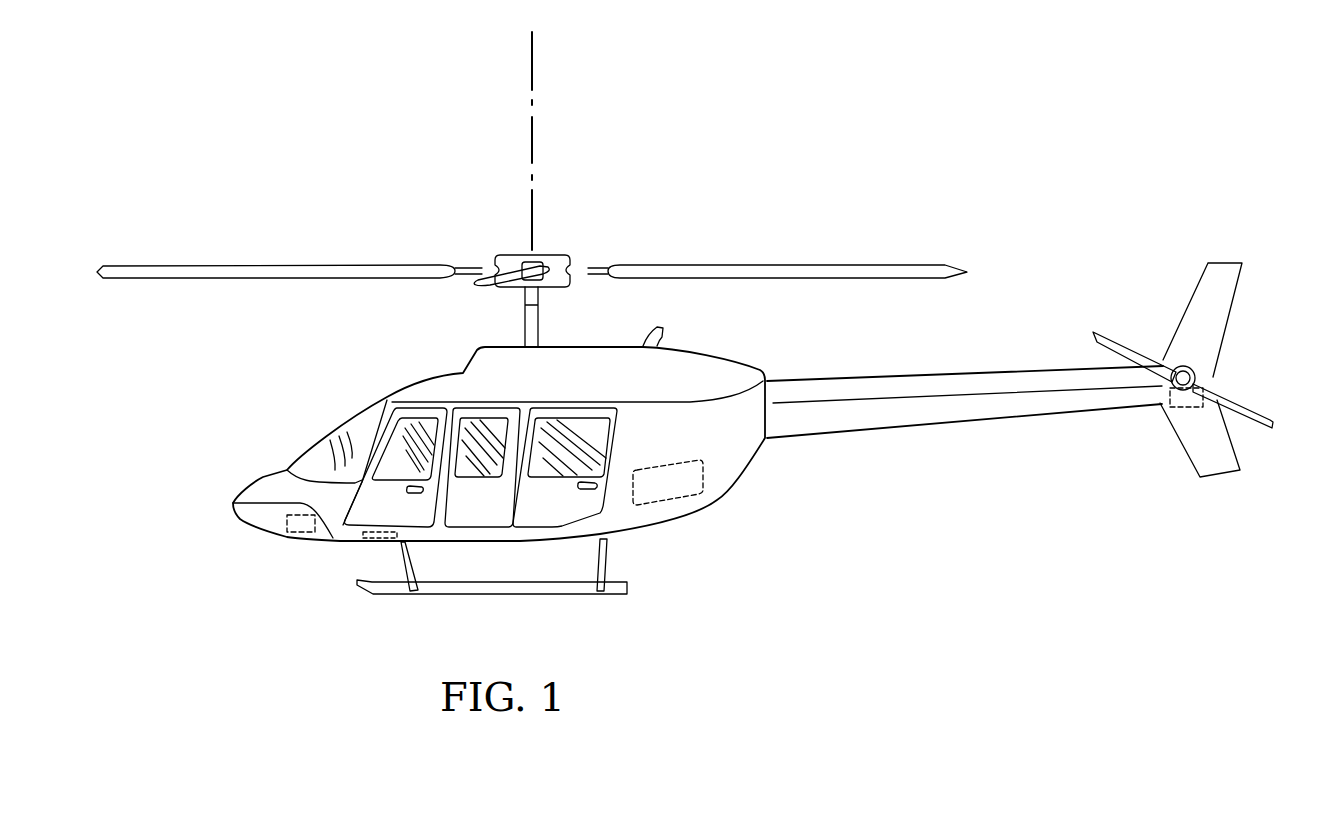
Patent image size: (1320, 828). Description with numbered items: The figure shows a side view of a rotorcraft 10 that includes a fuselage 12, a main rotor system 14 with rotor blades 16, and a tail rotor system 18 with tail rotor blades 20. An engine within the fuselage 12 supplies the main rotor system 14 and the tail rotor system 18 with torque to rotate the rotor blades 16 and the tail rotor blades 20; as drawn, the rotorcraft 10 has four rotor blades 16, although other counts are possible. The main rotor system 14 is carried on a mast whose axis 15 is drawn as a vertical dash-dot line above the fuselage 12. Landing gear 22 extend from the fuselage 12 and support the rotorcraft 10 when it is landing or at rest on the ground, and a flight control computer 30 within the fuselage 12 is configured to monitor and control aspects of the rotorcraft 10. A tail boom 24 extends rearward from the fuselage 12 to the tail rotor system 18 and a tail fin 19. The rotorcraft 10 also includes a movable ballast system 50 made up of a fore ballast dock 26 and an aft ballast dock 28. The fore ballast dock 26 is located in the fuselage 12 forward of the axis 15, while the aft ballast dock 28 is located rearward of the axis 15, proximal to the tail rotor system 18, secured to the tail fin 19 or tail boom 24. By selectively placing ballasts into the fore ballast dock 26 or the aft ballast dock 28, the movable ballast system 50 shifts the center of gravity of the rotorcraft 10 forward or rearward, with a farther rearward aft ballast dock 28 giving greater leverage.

The rotorcraft 10 is at (348, 179).
The fuselage 12 is at (670, 519).
The main rotor system 14 is at (561, 234).
The axis 15 is at (530, 140).
The rotor blades 16 is at (780, 265).
The tail rotor system 18 is at (1256, 358).
The tail fin 19 is at (1228, 263).
The tail rotor blades 20 is at (1128, 340).
The landing gear 22 is at (533, 596).
The tail boom 24 is at (940, 426).
The fore ballast dock 26 is at (362, 536).
The aft ballast dock 28 is at (1185, 410).
The flight control computer 30 is at (283, 520).
The movable ballast system 50 is at (799, 629).